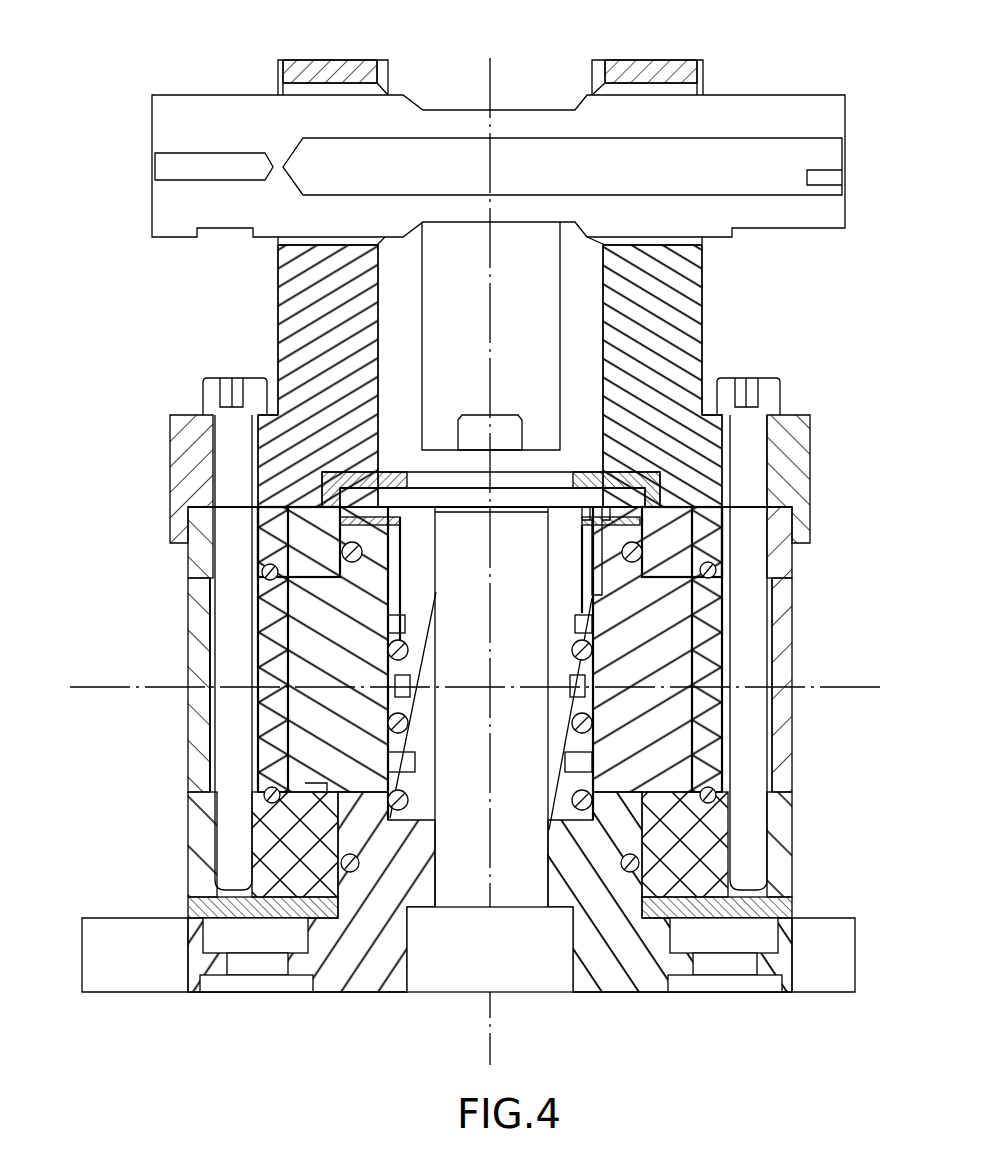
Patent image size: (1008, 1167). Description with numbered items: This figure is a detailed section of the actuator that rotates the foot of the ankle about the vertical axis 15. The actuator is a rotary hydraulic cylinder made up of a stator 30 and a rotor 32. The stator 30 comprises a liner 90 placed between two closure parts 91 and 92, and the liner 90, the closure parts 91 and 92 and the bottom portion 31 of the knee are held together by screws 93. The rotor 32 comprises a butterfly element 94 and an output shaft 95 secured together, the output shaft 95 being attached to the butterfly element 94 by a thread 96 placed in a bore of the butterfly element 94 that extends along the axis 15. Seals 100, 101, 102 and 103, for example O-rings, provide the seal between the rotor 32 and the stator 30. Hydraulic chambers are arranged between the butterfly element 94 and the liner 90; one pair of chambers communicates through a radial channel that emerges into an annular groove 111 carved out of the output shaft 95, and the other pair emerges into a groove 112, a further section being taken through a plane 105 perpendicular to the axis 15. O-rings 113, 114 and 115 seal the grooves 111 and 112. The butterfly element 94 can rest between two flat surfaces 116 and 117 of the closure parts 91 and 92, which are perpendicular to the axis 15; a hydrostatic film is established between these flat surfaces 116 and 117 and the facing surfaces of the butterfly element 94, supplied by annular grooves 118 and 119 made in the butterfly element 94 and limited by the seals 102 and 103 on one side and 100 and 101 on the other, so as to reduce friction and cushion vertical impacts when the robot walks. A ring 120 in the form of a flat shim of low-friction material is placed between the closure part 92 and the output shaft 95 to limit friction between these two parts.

The vertical axis 15 is at (492, 70).
The bottom portion of a knee 31 is at (290, 318).
The screws 93 is at (205, 400).
The flat surface 117 is at (296, 575).
The thread 96 is at (405, 556).
The closure part 91 is at (195, 570).
The liner 90 is at (198, 742).
The butterfly element 94 is at (680, 640).
The output shaft 95 is at (643, 985).
The seal 102 is at (365, 846).
The seal 100 is at (352, 560).
The seal 101 is at (258, 576).
The annular groove 119 is at (325, 563).
The annular groove 111 is at (582, 648).
The groove 112 is at (570, 755).
The O-ring 113 is at (410, 650).
The O-ring 114 is at (410, 723).
The O-ring 115 is at (410, 800).
The closure part 92 is at (198, 828).
The seal 103 is at (256, 815).
The annular groove 118 is at (292, 785).
The flat surface 116 is at (305, 810).
The ring 120 is at (785, 905).
The rotor 32 is at (355, 1012).
The plane 105 is at (815, 687).
The stator 30 is at (78, 687).